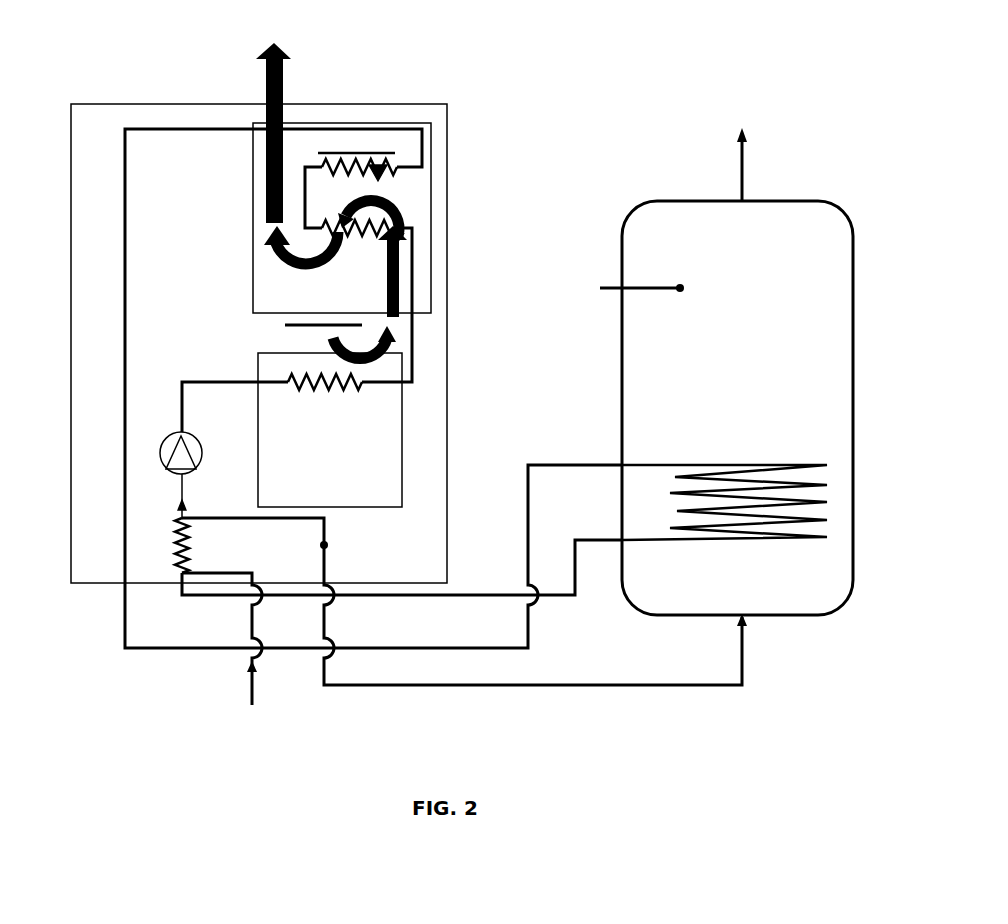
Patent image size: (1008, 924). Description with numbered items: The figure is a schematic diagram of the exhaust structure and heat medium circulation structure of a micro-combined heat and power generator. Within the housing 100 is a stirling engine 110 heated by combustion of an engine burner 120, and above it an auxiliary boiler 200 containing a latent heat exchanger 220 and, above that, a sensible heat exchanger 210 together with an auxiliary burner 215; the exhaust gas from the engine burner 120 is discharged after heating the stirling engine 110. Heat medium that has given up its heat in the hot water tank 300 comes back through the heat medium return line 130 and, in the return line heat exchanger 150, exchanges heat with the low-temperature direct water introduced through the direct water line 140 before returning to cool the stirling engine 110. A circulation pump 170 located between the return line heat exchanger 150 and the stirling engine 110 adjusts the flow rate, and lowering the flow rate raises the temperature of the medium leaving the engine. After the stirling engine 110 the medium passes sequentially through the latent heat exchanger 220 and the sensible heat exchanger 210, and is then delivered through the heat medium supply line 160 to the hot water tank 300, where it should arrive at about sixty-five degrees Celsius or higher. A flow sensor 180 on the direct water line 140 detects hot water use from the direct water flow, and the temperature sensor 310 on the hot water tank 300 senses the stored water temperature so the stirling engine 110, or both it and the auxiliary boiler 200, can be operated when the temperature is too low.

The housing 100 is at (448, 113).
The stirling engine 110 is at (402, 407).
The engine burner 120 is at (352, 330).
The heat medium return line 130 is at (559, 598).
The direct water line 140 is at (249, 688).
The return line heat exchanger 150 is at (180, 552).
The heat medium supply line 160 is at (127, 298).
The circulation pump 170 is at (193, 447).
The flow sensor 180 is at (324, 545).
The auxiliary boiler 200 is at (431, 218).
The sensible heat exchanger 210 is at (393, 168).
The auxiliary burner 215 is at (395, 153).
The latent heat exchanger 220 is at (398, 233).
The hot water tank 300 is at (793, 243).
The temperature sensor 310 is at (617, 291).